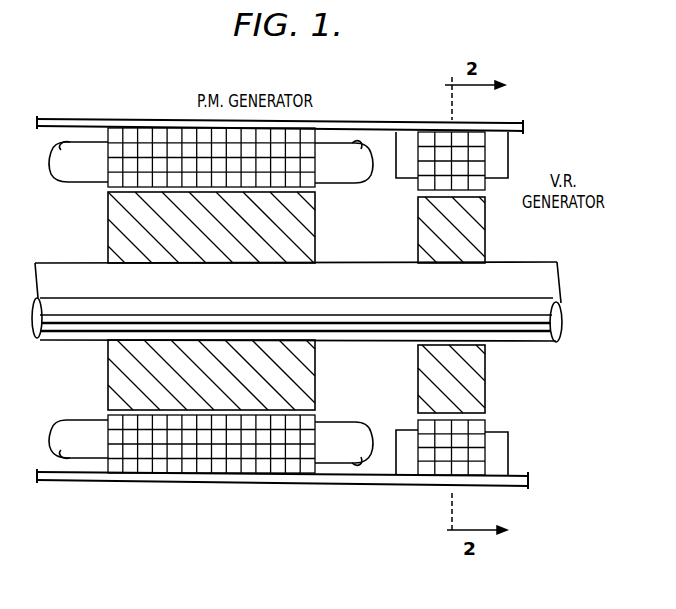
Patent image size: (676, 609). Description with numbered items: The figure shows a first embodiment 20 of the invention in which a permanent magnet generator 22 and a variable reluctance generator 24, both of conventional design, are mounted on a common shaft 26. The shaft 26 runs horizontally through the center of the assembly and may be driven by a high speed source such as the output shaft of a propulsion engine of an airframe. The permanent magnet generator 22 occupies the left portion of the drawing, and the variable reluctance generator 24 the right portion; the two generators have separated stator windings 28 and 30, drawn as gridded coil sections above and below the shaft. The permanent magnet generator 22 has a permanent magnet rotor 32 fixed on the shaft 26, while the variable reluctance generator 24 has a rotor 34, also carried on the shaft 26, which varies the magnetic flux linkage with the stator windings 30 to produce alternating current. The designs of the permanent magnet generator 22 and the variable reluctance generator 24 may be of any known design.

The first embodiment 20 is at (143, 96).
The permanent magnet generator 22 is at (194, 498).
The variable reluctance generator 24 is at (532, 373).
The common shaft 26 is at (548, 290).
The stator windings 28 is at (292, 165).
The stator windings 30 is at (434, 167).
The permanent magnet rotor 32 is at (125, 223).
The rotor 34 is at (432, 227).